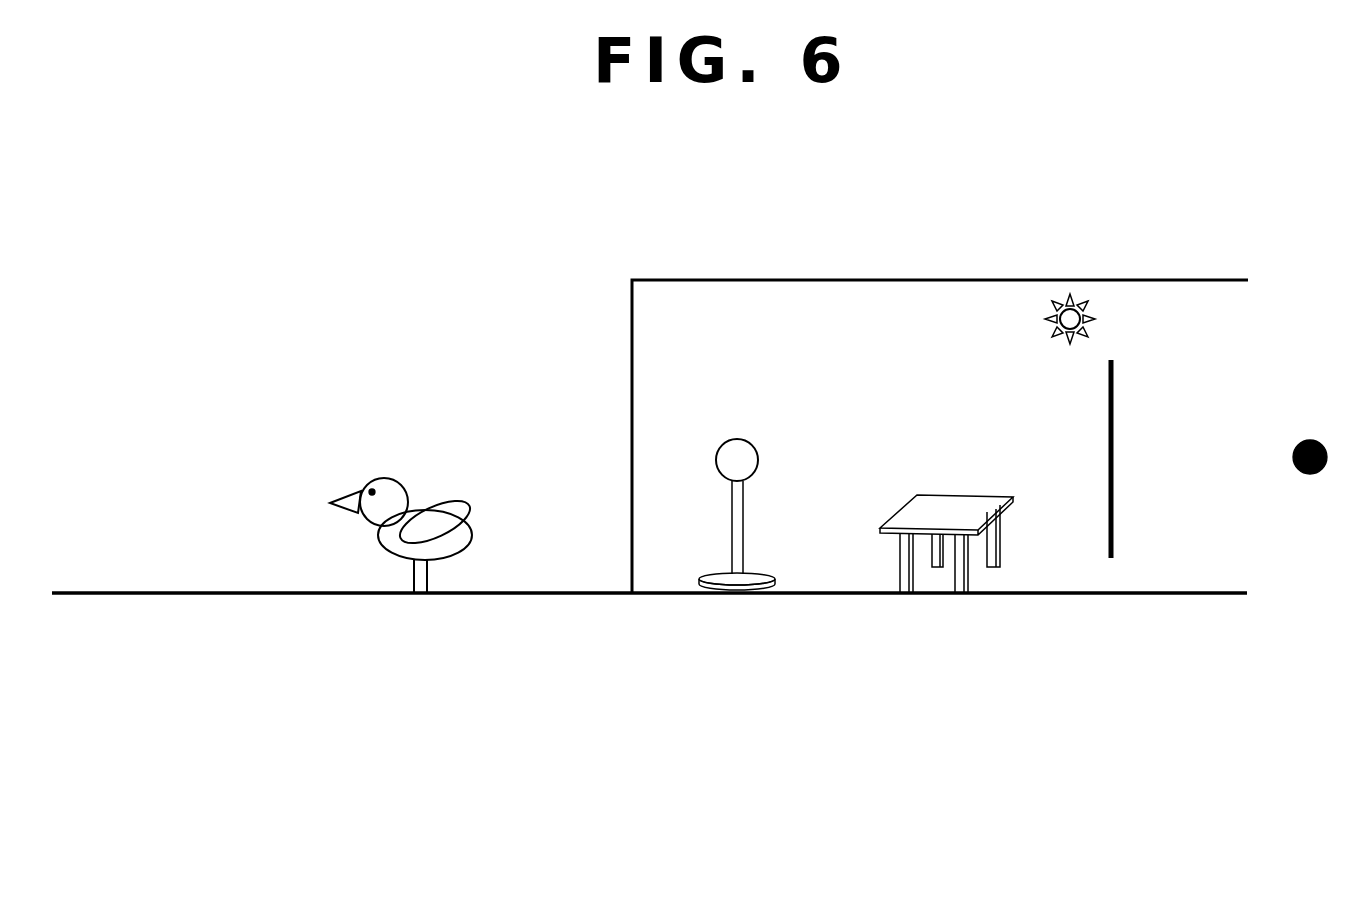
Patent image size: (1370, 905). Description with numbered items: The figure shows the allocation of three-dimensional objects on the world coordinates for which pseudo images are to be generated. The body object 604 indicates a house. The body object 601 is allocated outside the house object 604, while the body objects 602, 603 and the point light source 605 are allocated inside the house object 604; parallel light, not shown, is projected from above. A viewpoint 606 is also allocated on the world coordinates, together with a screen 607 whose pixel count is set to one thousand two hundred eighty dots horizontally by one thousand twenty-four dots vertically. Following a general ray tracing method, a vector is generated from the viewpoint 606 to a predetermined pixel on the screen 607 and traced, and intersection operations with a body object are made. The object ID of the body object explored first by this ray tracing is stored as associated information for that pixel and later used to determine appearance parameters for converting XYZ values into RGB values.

The body object 601 is at (383, 478).
The body object 602 is at (950, 495).
The body object 603 is at (737, 438).
The body object 604 is at (847, 278).
The point light source 605 is at (1050, 319).
The viewpoint 606 is at (1310, 440).
The screen 607 is at (1113, 410).